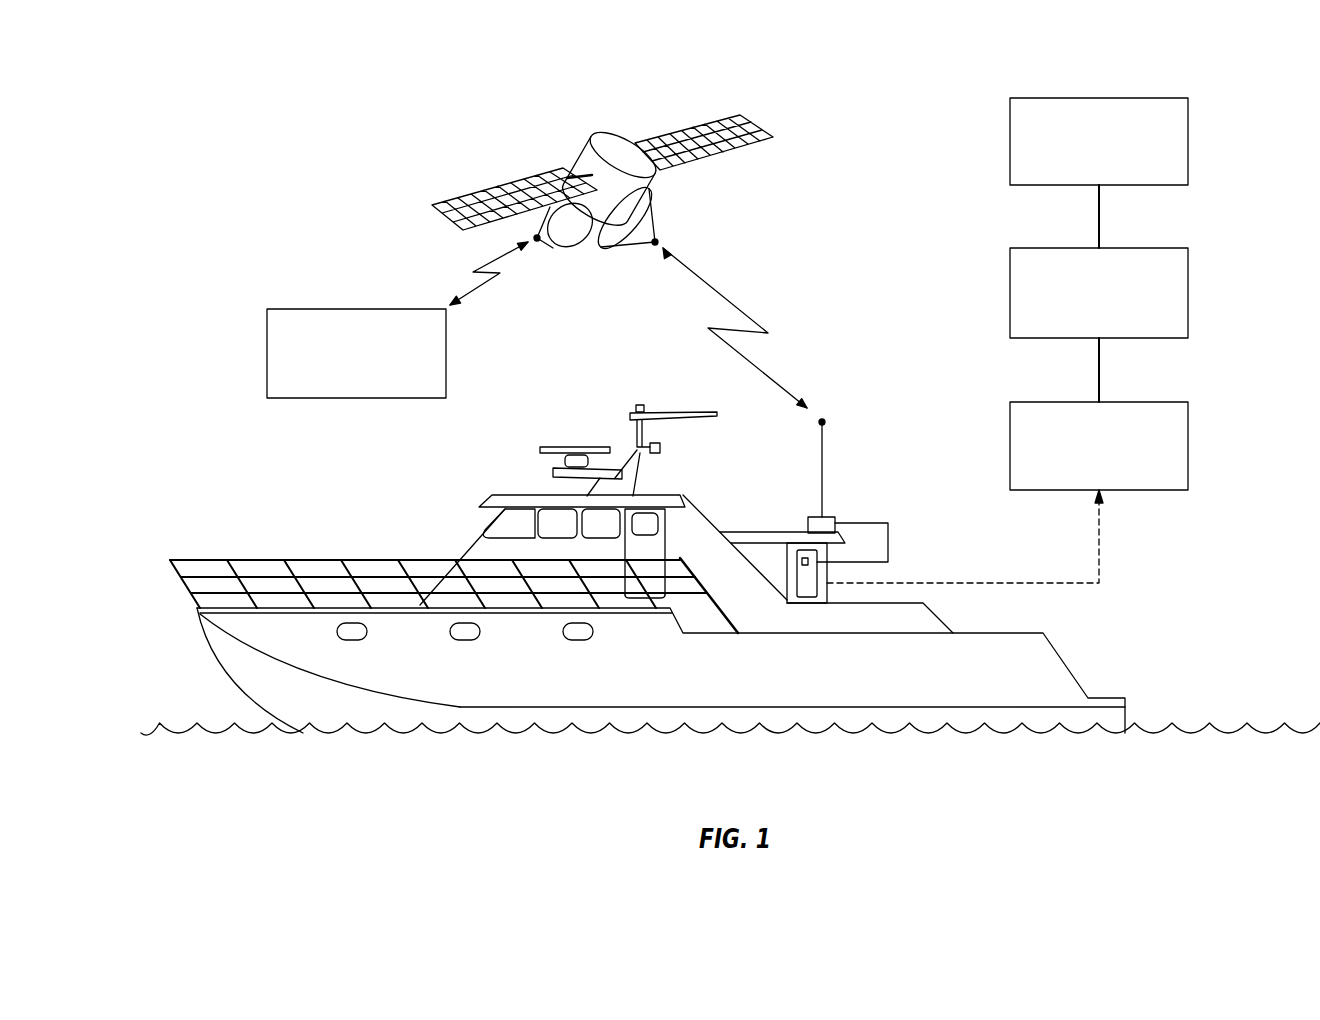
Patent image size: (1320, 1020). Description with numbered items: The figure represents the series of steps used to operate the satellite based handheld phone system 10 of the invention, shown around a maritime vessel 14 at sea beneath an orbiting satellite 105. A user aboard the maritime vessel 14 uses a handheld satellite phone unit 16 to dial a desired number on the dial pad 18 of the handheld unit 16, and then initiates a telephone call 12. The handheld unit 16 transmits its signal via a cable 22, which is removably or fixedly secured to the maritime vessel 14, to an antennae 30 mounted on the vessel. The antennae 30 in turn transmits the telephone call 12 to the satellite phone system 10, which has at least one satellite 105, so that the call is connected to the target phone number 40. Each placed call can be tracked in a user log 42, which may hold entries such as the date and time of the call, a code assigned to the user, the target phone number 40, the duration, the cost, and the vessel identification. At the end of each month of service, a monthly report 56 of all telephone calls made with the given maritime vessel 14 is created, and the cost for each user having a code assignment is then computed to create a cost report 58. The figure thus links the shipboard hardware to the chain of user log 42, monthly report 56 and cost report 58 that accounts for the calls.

The satellite based handheld phone system 10 is at (201, 144).
The satellite 105 is at (617, 152).
The target phone number 40 is at (300, 309).
The telephone call 12 is at (737, 302).
The antennae 30 is at (824, 420).
The cost report 58 is at (1153, 98).
The monthly report 56 is at (1153, 248).
The user log 42 is at (1153, 402).
The cable 22 is at (872, 524).
The dial pad 18 is at (804, 558).
The handheld satellite phone unit 16 is at (808, 588).
The maritime vessel 14 is at (1070, 671).